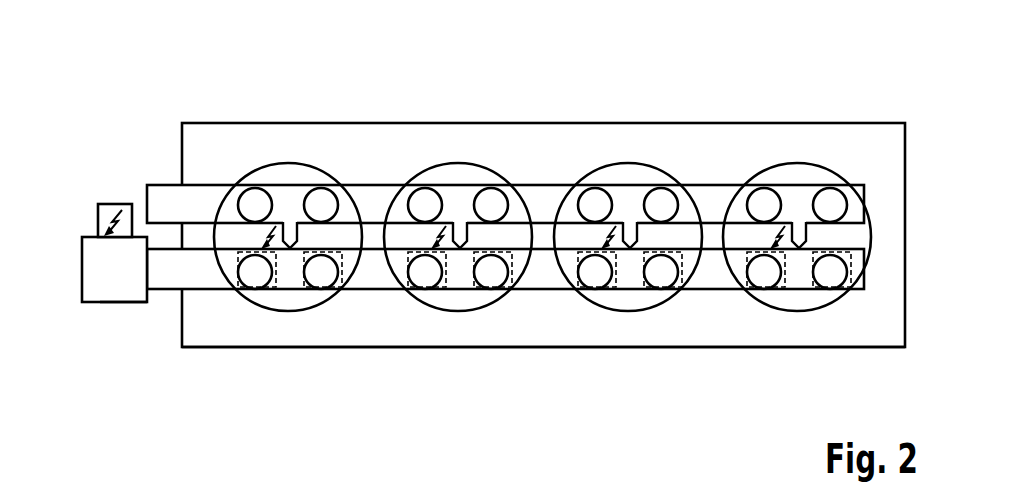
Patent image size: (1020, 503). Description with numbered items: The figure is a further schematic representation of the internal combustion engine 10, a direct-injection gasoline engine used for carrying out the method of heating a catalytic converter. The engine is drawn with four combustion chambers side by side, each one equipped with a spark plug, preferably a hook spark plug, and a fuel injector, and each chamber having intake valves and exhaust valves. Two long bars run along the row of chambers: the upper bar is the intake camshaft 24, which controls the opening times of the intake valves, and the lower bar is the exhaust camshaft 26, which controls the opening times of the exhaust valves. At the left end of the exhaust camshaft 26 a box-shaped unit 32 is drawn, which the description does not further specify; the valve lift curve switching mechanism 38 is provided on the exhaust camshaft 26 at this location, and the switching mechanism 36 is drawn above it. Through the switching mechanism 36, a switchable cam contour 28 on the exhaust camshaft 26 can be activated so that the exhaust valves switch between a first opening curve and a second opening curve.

The internal combustion engine 10 is at (150, 76).
The intake camshaft 24 is at (160, 185).
The exhaust camshaft 26 is at (160, 289).
The switchable cam contour 28 is at (852, 263).
The control unit 32 is at (109, 291).
The switching mechanism 36 is at (117, 204).
The valve lift curve switching mechanism 38 is at (129, 302).